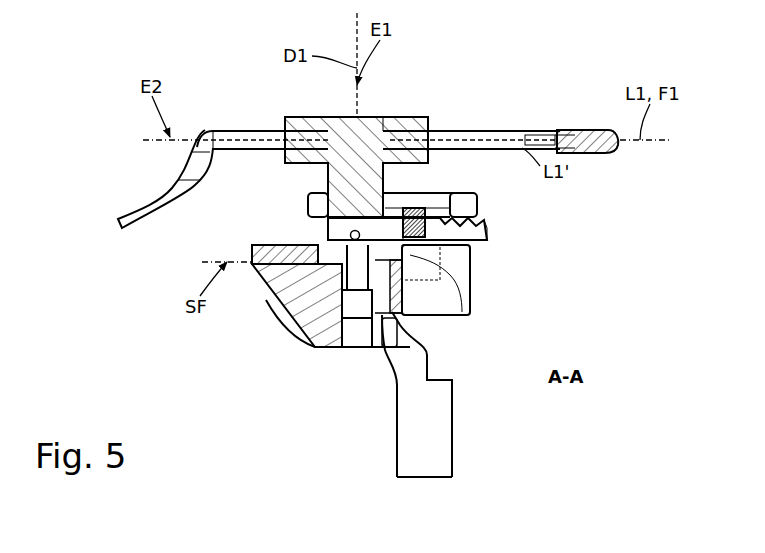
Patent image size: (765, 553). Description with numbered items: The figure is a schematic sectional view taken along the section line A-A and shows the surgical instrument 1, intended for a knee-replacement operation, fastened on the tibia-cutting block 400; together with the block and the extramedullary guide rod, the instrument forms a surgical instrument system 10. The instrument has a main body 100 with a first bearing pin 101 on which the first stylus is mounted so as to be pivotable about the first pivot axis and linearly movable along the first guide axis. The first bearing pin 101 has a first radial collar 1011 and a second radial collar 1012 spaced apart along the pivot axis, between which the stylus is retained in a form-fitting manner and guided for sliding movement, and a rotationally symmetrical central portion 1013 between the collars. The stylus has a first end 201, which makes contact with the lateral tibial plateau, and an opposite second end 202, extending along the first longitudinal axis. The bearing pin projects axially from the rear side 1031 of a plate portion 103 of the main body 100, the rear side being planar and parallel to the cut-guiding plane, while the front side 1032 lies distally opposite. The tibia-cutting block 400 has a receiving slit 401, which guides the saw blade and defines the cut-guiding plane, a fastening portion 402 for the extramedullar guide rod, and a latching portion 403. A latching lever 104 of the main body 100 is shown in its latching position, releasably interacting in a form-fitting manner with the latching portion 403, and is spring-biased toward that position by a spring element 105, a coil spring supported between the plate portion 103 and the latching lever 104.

The surgical instrument 1 is at (377, 238).
The surgical instrument system 10 is at (493, 55).
The main body 100 is at (542, 237).
The first bearing pin 101 is at (372, 110).
The first radial collar 1011 is at (288, 123).
The second radial collar 1012 is at (287, 157).
The central portion 1013 is at (385, 118).
The plate portion 103 is at (308, 200).
The rear side 1031 is at (430, 186).
The front side 1032 is at (322, 222).
The latching lever 104 is at (487, 242).
The spring element 105 is at (477, 208).
The first end 201 is at (120, 225).
The second end 202 is at (618, 140).
The tibia-cutting block 400 is at (280, 307).
The receiving slit 401 is at (468, 277).
The fastening portion 402 is at (452, 453).
The latching portion 403 is at (344, 345).